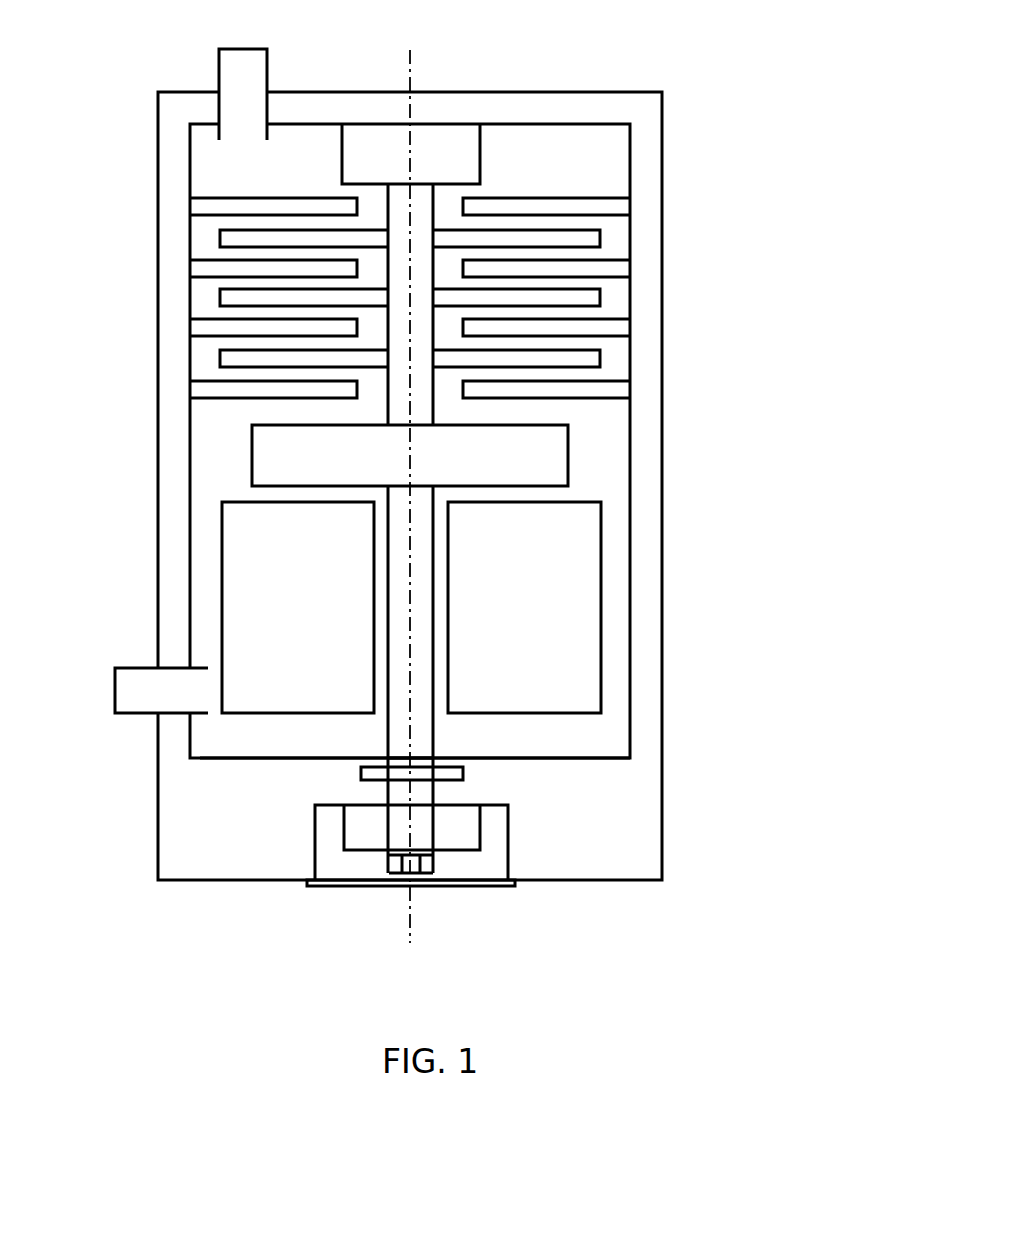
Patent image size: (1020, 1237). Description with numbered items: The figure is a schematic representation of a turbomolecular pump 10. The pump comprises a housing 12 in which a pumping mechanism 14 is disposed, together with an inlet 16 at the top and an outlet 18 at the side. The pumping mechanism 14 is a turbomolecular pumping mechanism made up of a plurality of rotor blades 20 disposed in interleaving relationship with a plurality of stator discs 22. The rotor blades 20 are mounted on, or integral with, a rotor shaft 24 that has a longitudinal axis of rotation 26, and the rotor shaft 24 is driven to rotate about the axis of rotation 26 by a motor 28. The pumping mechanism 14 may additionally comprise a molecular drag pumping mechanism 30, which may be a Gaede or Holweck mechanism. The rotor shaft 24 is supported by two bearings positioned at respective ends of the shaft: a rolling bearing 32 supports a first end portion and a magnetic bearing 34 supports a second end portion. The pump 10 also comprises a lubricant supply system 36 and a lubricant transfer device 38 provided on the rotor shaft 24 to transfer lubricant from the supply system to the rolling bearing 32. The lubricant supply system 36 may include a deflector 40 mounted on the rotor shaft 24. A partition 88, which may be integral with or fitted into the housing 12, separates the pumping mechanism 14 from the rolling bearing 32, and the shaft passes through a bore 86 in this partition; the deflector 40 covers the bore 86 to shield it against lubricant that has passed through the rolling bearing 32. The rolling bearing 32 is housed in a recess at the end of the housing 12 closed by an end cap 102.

The turbomolecular pump 10 is at (698, 65).
The housing 12 is at (664, 408).
The pumping mechanism 14 is at (603, 187).
The inlet 16 is at (219, 67).
The outlet 18 is at (125, 668).
The rotor blades 20 is at (600, 298).
The stator discs 22 is at (605, 390).
The rotor shaft 24 is at (422, 192).
The axis of rotation 26 is at (410, 55).
The motor 28 is at (601, 619).
The molecular drag pumping mechanism 30 is at (252, 452).
The rolling bearing 32 is at (482, 840).
The magnetic bearing 34 is at (377, 137).
The lubricant supply system 36 is at (313, 853).
The lubricant transfer device 38 is at (397, 872).
The deflector 40 is at (463, 773).
The bore 86 is at (435, 755).
The partition 88 is at (617, 755).
The end cap 102 is at (332, 888).